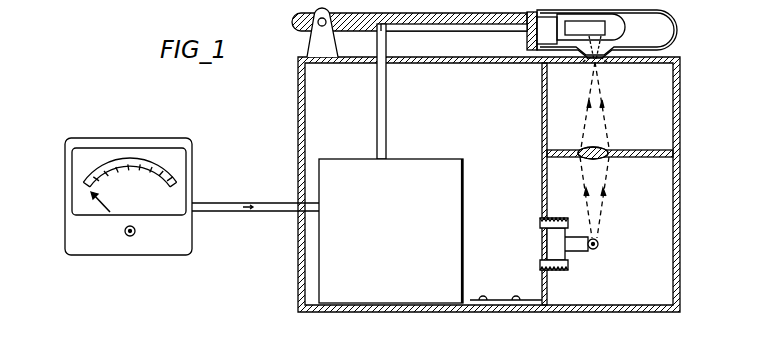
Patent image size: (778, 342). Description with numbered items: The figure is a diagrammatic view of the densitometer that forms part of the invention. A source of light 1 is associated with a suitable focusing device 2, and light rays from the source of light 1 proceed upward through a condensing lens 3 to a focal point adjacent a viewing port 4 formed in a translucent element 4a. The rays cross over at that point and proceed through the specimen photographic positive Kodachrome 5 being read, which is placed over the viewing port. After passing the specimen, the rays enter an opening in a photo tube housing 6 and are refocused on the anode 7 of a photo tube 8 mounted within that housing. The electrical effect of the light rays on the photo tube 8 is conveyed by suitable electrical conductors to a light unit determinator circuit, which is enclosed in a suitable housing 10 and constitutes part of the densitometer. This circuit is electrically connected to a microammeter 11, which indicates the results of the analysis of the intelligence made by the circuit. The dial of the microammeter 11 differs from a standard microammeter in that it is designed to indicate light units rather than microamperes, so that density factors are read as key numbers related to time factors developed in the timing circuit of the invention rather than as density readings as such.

The source of light 1 is at (600, 246).
The focusing device 2 is at (545, 247).
The condensing lens 3 is at (604, 148).
The viewing port 4 is at (583, 66).
The translucent element 4a is at (603, 66).
The specimen photographic positive Kodachrome 5 is at (655, 62).
The photo tube housing 6 is at (677, 27).
The anode 7 is at (608, 31).
The photo tube 8 is at (568, 43).
The housing 10 is at (418, 216).
The microammeter 11 is at (173, 156).